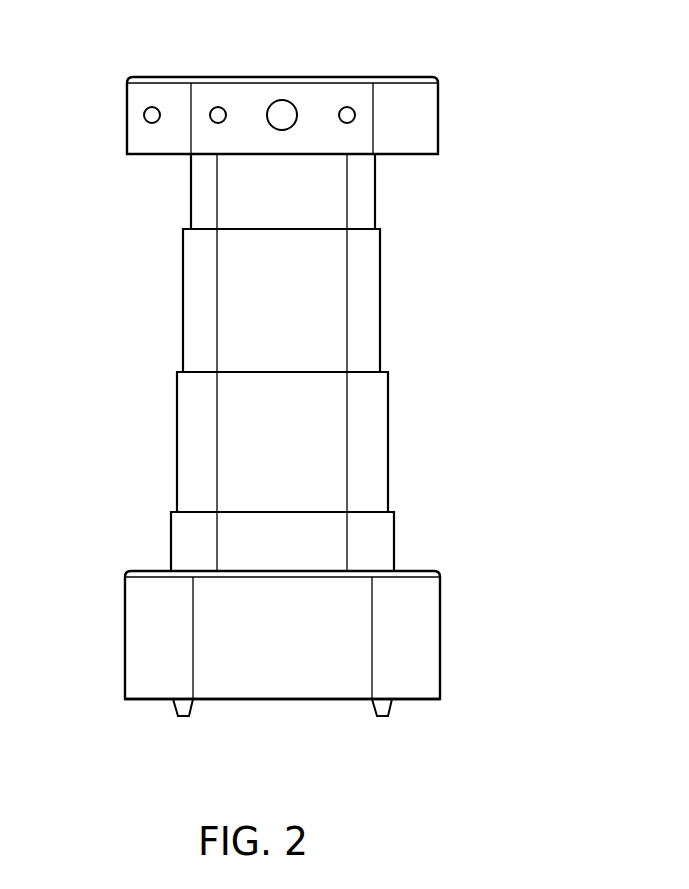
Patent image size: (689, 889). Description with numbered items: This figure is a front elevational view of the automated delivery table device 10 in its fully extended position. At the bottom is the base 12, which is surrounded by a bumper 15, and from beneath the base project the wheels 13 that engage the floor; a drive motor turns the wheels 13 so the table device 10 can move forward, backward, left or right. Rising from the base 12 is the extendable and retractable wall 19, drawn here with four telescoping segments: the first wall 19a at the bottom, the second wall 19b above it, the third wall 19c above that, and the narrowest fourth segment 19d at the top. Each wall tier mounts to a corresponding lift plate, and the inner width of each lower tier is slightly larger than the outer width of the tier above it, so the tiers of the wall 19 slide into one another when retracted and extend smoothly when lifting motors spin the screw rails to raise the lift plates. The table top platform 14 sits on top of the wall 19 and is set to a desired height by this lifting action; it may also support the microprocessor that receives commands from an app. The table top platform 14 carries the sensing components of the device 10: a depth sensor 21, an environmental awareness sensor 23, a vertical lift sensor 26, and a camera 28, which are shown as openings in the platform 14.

The automated delivery table device 10 is at (451, 49).
The base 12 is at (263, 673).
The wheels 13 is at (183, 716).
The table top platform 14 is at (438, 113).
The bumper 15 is at (125, 636).
The extendable and retractable wall 19 is at (515, 168).
The first wall 19a is at (394, 540).
The second wall 19b is at (388, 438).
The third wall 19c is at (380, 298).
The fourth wall segment 19d is at (375, 186).
The depth sensor 21 is at (349, 106).
The environmental awareness sensor 23 is at (218, 106).
The vertical lift sensor 26 is at (152, 106).
The camera 28 is at (284, 99).